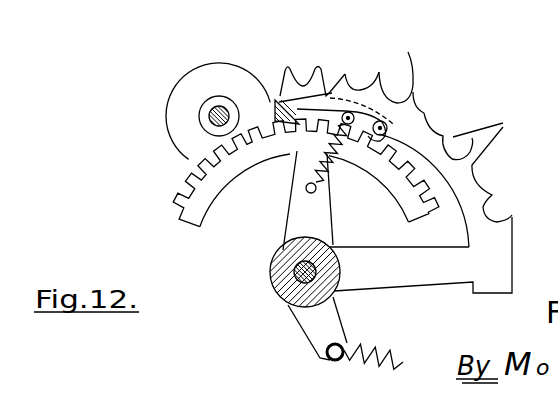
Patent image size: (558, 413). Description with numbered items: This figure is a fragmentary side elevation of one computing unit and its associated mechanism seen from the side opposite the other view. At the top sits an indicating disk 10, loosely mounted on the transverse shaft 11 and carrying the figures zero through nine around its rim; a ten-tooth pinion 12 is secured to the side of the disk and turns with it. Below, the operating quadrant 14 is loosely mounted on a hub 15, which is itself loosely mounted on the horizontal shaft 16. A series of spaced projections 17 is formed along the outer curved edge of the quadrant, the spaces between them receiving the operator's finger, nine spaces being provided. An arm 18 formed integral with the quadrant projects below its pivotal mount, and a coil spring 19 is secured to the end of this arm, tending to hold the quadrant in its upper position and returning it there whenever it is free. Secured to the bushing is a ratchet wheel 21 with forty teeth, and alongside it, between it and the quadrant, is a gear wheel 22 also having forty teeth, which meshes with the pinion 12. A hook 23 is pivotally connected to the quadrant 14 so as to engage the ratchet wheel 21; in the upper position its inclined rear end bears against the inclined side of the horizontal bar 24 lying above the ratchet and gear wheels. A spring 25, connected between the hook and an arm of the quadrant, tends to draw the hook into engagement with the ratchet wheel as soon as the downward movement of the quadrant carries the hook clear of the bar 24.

The indicating disk 10 is at (175, 116).
The transverse shaft 11 is at (222, 107).
The pinion 12 is at (205, 147).
The operating quadrant 14 is at (467, 202).
The hub 15 is at (278, 280).
The horizontal shaft 16 is at (284, 297).
The spaced projections 17 is at (345, 74).
The arm 18 is at (315, 323).
The coil spring 19 is at (376, 371).
The ratchet wheel 21 is at (200, 181).
The gear wheel 22 is at (264, 160).
The hook 23 is at (320, 103).
The horizontal bar 24 is at (273, 97).
The spring 25 is at (332, 162).